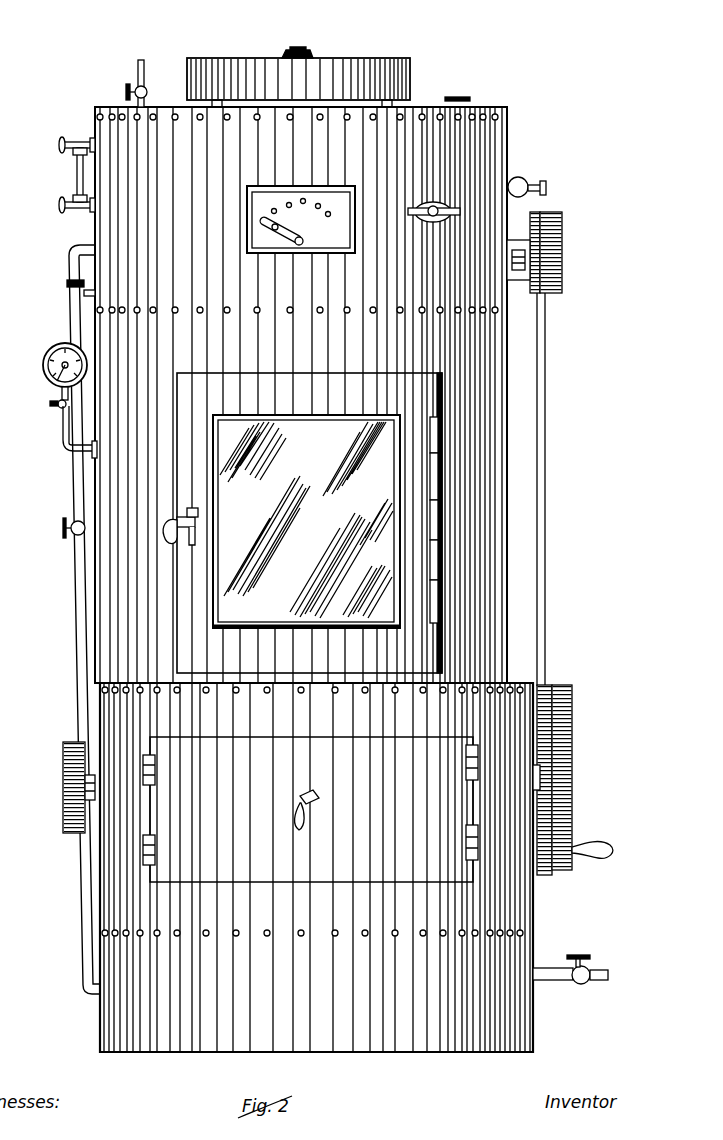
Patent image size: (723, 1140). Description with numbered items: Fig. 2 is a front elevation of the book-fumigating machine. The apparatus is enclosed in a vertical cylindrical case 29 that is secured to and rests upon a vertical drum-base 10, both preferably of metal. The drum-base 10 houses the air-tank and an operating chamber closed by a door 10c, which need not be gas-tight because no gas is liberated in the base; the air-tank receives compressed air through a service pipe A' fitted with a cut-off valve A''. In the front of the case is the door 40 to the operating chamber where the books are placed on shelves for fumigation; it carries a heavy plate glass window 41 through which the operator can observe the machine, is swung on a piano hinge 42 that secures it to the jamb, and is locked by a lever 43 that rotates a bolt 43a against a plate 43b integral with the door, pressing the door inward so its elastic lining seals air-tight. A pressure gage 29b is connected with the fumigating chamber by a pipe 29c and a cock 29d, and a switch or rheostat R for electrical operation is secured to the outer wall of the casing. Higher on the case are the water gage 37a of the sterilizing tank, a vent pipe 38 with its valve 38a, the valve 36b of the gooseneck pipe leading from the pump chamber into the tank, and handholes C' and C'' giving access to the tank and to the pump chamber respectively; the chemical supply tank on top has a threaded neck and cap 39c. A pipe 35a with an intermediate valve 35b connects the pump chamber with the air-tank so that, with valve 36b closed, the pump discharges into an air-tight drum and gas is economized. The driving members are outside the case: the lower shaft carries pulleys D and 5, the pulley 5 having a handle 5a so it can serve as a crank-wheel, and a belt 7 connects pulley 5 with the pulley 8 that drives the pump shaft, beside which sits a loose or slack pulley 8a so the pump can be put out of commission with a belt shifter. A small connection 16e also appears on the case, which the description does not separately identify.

The neck and cap 39c is at (303, 47).
The vent pipe 38 is at (137, 74).
The valve 38a is at (126, 93).
The handhole C' is at (489, 83).
The handhole C'' is at (472, 170).
The valve 36b is at (536, 172).
The pulley 8 is at (527, 217).
The loose or slack pulley 8a is at (563, 249).
The water gage 37a is at (77, 182).
The switch or rheostat R is at (283, 232).
The pipe 35a is at (69, 266).
The connection 16e is at (93, 296).
The pressure gage 29b is at (50, 349).
The cylindrical case 29 is at (301, 395).
The cock 29d is at (52, 404).
The pipe 29c is at (63, 428).
The door 40 is at (309, 523).
The belt 7 is at (547, 483).
The bolt 43a is at (196, 513).
The plate glass window 41 is at (306, 521).
The piano hinge 42 is at (433, 515).
The intermediate valve 35b is at (62, 532).
The lever 43 is at (172, 544).
The plate 43b is at (193, 547).
The pulley 5 is at (572, 693).
The pulley D is at (66, 756).
The handle 5a is at (597, 845).
The door 10c is at (310, 809).
The drum-base 10 is at (118, 906).
The cut-off valve A'' is at (585, 947).
The service pipe A' is at (570, 990).